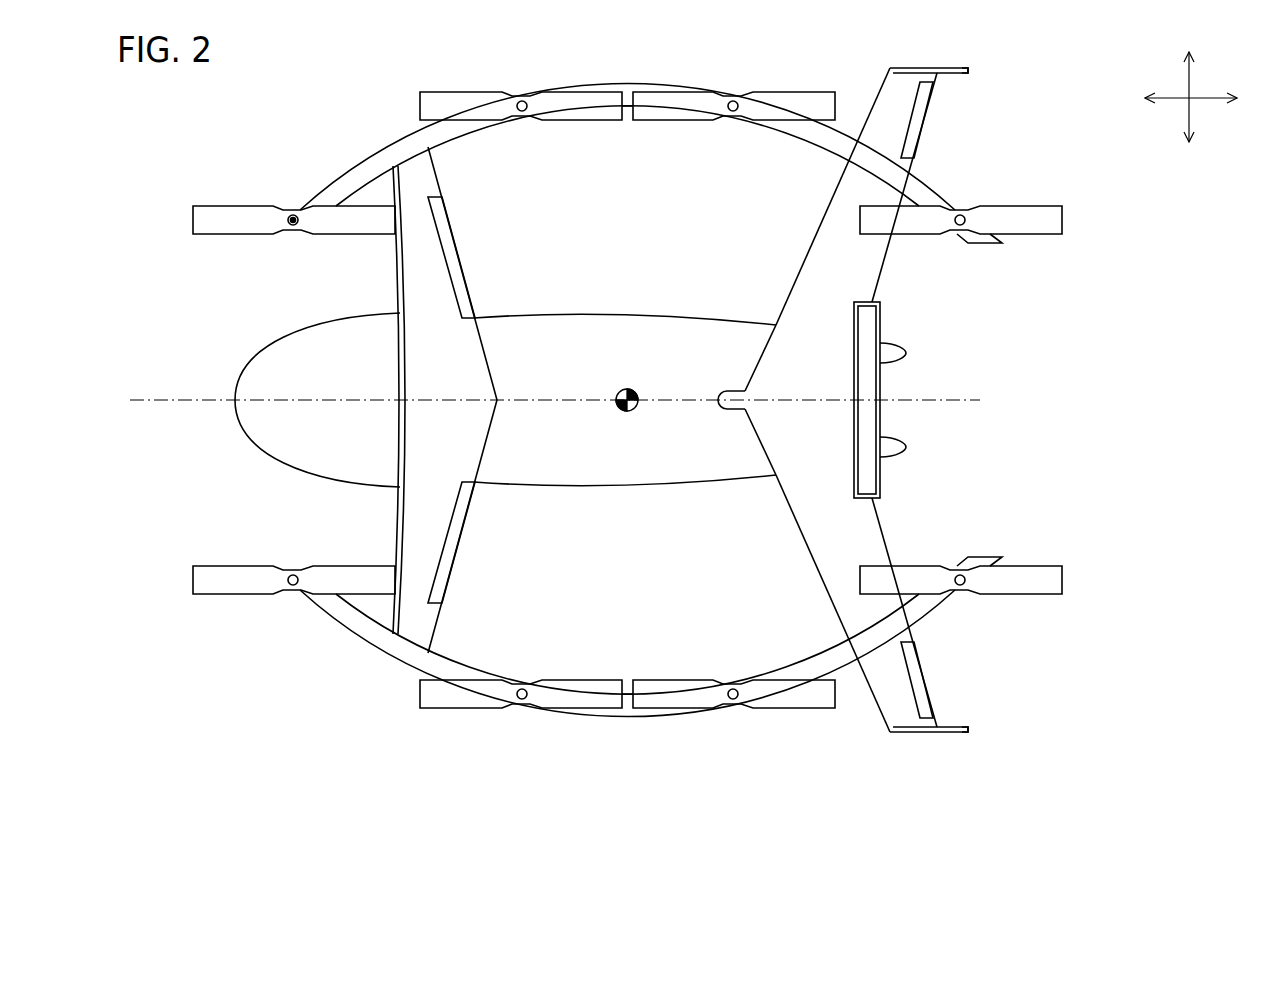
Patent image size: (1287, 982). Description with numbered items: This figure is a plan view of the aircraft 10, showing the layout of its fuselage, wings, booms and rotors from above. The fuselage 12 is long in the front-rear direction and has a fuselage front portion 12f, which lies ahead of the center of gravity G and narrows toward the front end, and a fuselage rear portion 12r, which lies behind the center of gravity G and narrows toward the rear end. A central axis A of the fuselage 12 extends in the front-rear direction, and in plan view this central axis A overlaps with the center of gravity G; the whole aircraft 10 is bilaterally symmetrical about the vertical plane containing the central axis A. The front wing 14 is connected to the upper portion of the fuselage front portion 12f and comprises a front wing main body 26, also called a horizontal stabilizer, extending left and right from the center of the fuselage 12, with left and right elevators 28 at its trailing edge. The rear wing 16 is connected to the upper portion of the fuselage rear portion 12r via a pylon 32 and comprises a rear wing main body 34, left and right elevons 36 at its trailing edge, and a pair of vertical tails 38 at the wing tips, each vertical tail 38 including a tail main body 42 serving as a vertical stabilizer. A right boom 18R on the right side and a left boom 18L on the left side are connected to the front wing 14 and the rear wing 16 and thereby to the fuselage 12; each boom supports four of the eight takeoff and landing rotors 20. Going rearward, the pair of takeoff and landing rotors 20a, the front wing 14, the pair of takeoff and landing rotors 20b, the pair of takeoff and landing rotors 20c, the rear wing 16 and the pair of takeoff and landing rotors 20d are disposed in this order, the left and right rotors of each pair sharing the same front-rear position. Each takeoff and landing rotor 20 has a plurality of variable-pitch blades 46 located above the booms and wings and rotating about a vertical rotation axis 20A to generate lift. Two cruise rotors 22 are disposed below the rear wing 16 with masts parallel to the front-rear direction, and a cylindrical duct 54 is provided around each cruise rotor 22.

The aircraft 10 is at (180, 118).
The fuselage 12 is at (473, 400).
The fuselage front portion 12f is at (247, 410).
The fuselage rear portion 12r is at (750, 336).
The front wing 14 is at (392, 298).
The rear wing 16 is at (882, 400).
The right boom 18R is at (352, 163).
The left boom 18L is at (363, 645).
The takeoff and landing rotors 20 is at (616, 400).
The takeoff and landing rotor 20a is at (294, 401).
The rotation axis 20A is at (293, 212).
The takeoff and landing rotor 20b is at (566, 122).
The takeoff and landing rotor 20c is at (701, 123).
The takeoff and landing rotor 20d is at (1047, 236).
The cruise rotors 22 is at (901, 404).
The front wing main body 26 is at (410, 252).
The elevators 28 is at (450, 245).
The pylon 32 is at (716, 411).
The rear wing main body 34 is at (827, 260).
The elevons 36 is at (922, 110).
The vertical tails 38 is at (970, 66).
The tail main body 42 is at (950, 74).
The blades 46 is at (616, 400).
The cylindrical duct 54 is at (878, 309).
The central axis A is at (555, 402).
The center of gravity G is at (620, 411).